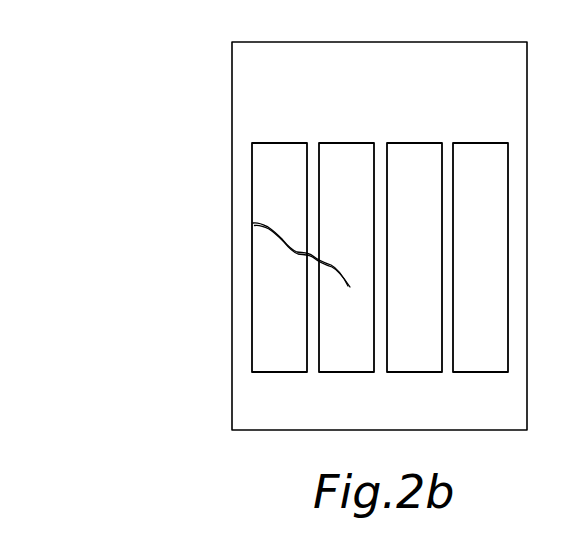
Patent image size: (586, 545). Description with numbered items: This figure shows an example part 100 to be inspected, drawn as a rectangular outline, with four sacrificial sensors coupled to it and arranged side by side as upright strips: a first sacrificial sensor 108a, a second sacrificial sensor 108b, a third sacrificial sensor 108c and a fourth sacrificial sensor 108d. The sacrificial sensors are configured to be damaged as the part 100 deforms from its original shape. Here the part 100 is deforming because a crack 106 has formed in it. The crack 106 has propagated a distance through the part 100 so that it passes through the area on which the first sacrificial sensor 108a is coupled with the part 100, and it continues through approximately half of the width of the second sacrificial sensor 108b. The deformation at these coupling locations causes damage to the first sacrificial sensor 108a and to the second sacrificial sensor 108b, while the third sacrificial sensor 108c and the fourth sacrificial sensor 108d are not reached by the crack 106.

The part 100 is at (150, 161).
The crack 106 is at (253, 223).
The first sacrificial sensor 108a is at (278, 177).
The second sacrificial sensor 108b is at (342, 165).
The third sacrificial sensor 108c is at (407, 177).
The fourth sacrificial sensor 108d is at (473, 163).